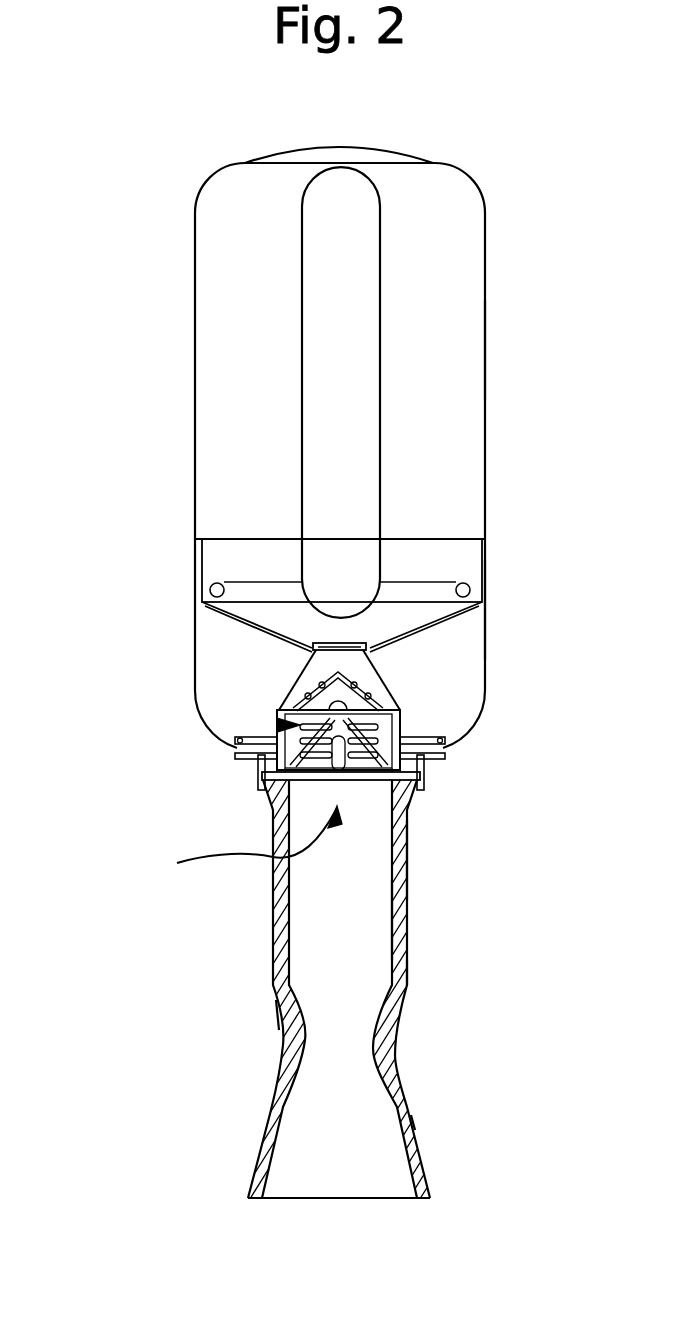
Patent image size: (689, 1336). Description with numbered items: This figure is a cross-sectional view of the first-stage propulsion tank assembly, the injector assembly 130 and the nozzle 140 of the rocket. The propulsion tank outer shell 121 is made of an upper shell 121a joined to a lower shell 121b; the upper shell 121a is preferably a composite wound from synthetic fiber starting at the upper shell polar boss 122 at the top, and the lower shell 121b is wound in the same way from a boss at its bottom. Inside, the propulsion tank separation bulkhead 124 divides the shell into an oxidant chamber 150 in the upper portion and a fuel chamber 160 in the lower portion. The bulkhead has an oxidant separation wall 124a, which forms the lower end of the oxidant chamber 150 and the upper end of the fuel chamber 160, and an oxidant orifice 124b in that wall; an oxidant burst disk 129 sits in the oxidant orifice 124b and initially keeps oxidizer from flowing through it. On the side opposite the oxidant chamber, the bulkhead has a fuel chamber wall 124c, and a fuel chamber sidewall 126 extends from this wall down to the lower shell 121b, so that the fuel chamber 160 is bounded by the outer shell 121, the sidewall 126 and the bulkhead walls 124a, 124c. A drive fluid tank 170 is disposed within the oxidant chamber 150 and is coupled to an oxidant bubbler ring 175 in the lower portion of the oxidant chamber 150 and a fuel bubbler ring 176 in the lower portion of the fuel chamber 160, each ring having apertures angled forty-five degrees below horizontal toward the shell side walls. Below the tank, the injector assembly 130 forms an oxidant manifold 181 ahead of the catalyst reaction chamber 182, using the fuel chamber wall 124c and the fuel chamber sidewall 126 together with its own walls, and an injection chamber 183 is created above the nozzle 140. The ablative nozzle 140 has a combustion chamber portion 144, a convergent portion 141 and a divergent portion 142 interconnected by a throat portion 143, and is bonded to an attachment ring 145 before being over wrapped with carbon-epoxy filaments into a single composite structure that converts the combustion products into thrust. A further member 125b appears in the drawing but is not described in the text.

The propulsion tank outer shell 121 is at (195, 348).
The upper shell 121a is at (485, 348).
The lower shell 121b is at (485, 605).
The upper shell polar boss 122 is at (383, 163).
The propulsion tank separation bulkhead 124 is at (423, 628).
The oxidant separation wall 124a is at (218, 608).
The oxidant orifice 124b is at (313, 647).
The fuel chamber wall 124c is at (298, 680).
The flange end member 125b is at (258, 750).
The fuel chamber sidewall 126 is at (387, 753).
The oxidant burst disk 129 is at (388, 678).
The injector assembly 130 is at (375, 783).
The nozzle 140 is at (373, 1018).
The convergent portion 141 is at (373, 1018).
The divergent portion 142 is at (407, 1118).
The throat portion 143 is at (300, 1043).
The combustion chamber portion 144 is at (407, 843).
The attachment ring 145 is at (408, 925).
The oxidant chamber 150 is at (273, 434).
The fuel chamber 160 is at (269, 689).
The drive fluid tank 170 is at (380, 460).
The oxidant bubbler ring 175 is at (197, 575).
The fuel bubbler ring 176 is at (235, 740).
The oxidant manifold 181 is at (385, 700).
The catalyst reaction chamber 182 is at (277, 727).
The injection chamber 183 is at (233, 844).